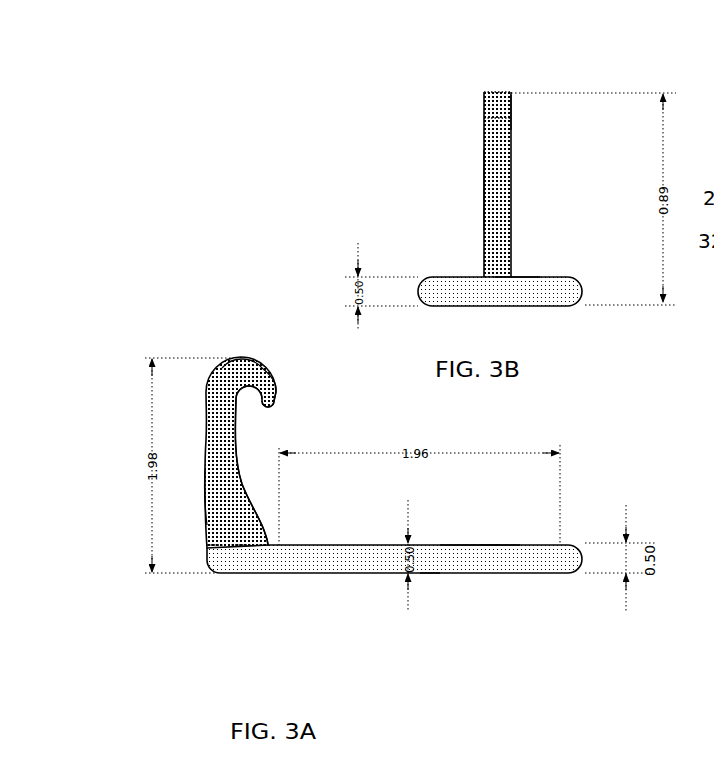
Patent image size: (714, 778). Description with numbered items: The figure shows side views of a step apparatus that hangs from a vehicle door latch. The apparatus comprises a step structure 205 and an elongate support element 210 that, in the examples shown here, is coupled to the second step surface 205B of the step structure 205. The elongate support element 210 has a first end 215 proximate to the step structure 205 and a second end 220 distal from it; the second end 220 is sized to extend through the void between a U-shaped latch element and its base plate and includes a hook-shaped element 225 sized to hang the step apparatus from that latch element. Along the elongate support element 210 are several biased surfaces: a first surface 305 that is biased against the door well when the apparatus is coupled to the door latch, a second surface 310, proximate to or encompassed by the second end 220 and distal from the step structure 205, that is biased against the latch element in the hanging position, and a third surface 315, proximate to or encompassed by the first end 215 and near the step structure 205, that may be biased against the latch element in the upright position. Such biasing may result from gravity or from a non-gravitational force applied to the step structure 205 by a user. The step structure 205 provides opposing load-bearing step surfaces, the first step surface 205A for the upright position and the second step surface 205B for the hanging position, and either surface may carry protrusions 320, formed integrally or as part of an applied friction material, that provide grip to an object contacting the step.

In FIG. 3B, the step structure 205 is at (556, 276).
In FIG. 3A, the first step surface 205A is at (471, 578).
In FIG. 3A, the second step surface 205B is at (467, 540).
In FIG. 3B, the elongate support element 210 is at (482, 211).
In FIG. 3A, the elongate support element 210 is at (204, 461).
In FIG. 3A, the first end 215 is at (262, 518).
In FIG. 3B, the second end 220 is at (497, 101).
In FIG. 3A, the second end 220 is at (247, 356).
In FIG. 3B, the hook-shaped element 225 is at (501, 134).
In FIG. 3A, the hook-shaped element 225 is at (277, 392).
In FIG. 3B, the first surface 305 is at (507, 192).
In FIG. 3A, the first surface 305 is at (204, 485).
In FIG. 3A, the second surface 310 is at (253, 386).
In FIG. 3A, the third surface 315 is at (268, 536).
In FIG. 3B, the protrusions 320 is at (521, 276).
In FIG. 3A, the protrusions 320 is at (492, 540).